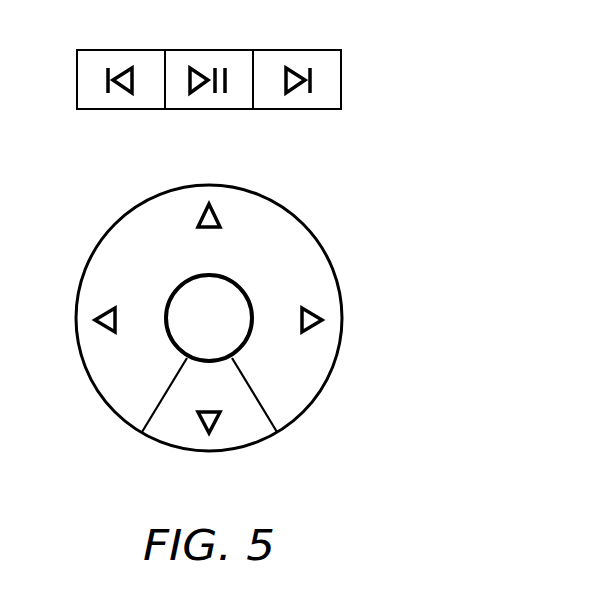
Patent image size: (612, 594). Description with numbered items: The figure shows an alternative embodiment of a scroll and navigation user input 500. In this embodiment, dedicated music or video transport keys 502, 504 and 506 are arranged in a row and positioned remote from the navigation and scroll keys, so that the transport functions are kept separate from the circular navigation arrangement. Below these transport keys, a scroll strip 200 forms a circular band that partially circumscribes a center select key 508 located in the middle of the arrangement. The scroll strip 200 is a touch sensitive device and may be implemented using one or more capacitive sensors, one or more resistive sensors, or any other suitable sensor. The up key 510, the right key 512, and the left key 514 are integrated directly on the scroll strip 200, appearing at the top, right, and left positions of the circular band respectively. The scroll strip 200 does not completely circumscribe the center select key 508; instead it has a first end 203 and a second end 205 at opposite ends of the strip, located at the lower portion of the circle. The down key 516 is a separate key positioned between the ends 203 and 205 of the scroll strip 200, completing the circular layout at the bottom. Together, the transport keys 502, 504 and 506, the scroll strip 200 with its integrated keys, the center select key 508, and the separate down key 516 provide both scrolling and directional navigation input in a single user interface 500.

The scroll and navigation user input 500 is at (441, 132).
The music or video transport key 502 is at (118, 49).
The music or video transport key 504 is at (208, 49).
The music or video transport key 506 is at (295, 49).
The scroll strip 200 is at (262, 208).
The center select key 508 is at (228, 303).
The up key 510 is at (177, 203).
The right key 512 is at (314, 310).
The left key 514 is at (92, 342).
The down key 516 is at (210, 444).
The first end 203 is at (148, 413).
The second end 205 is at (270, 413).